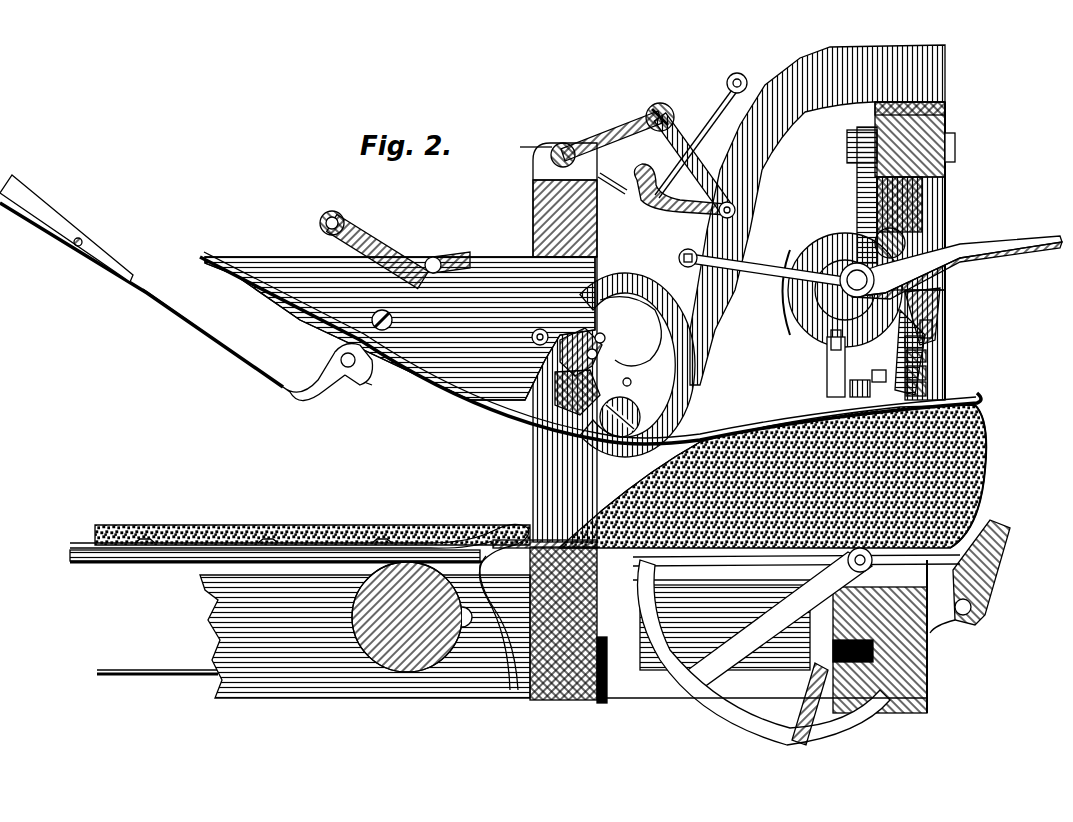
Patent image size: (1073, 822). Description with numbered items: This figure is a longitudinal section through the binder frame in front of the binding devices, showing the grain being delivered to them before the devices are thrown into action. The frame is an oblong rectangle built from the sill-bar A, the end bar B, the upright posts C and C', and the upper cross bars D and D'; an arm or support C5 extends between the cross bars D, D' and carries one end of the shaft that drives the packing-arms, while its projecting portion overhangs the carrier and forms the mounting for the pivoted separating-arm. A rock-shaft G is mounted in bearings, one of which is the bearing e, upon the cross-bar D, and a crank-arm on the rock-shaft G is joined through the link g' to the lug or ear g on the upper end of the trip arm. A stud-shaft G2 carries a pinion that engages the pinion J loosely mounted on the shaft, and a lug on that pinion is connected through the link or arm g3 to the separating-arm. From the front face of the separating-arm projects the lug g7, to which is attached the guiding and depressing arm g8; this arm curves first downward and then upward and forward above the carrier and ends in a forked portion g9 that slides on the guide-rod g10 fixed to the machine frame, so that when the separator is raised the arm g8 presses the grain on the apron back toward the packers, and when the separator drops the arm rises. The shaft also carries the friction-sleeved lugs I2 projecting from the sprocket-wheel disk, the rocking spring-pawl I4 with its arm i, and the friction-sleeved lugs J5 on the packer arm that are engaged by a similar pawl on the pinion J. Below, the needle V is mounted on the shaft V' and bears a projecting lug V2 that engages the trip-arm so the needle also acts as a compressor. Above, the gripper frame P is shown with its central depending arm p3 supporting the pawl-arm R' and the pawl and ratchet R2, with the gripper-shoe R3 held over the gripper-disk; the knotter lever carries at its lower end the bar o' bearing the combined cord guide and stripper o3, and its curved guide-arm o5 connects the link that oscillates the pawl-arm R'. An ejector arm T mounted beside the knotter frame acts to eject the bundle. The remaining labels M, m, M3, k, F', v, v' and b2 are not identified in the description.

The upright post C is at (552, 342).
The upper cross bar D is at (565, 218).
The arm or support C5 is at (812, 88).
The upper cross bar D' is at (915, 139).
The upright post C' is at (929, 288).
The friction-sleeved lugs I2 is at (857, 190).
The wheel M is at (845, 290).
The wheel rim m is at (845, 292).
The wheel guard M3 is at (792, 300).
The lug or ear g is at (743, 225).
The ejector arm T is at (1000, 262).
The bearing e is at (585, 139).
The link g' is at (690, 158).
The stud-shaft G2 is at (536, 328).
The link or arm g3 is at (376, 258).
The pin k is at (440, 247).
The guiding and depressing arm g8 is at (270, 372).
The forked end g9 is at (40, 215).
The guide-rod g10 is at (76, 247).
The arm or lug g7 is at (362, 372).
The pinion J is at (637, 365).
The rock-shaft G is at (593, 371).
The pawl arm i is at (630, 328).
The friction-sleeved lugs J5 is at (645, 404).
The rocking spring-pawl I4 is at (590, 348).
The feed material F' is at (773, 476).
The end bar B is at (300, 611).
The sill-bar A is at (550, 621).
The needle shaft V' is at (796, 630).
The needle V is at (764, 652).
The projecting lug V2 is at (833, 704).
The latch lever v is at (981, 566).
The latch pivot v' is at (985, 607).
The gripper frame P is at (942, 300).
The combined cord guide and stripper o3 is at (827, 366).
The bar o' is at (831, 387).
The pin b2 is at (923, 342).
The central depending arm p3 is at (932, 330).
The pawl-arm R' is at (958, 354).
The curved guide-arm o5 is at (886, 376).
The pawl and ratchet R2 is at (926, 374).
The gripper-shoe R3 is at (926, 390).